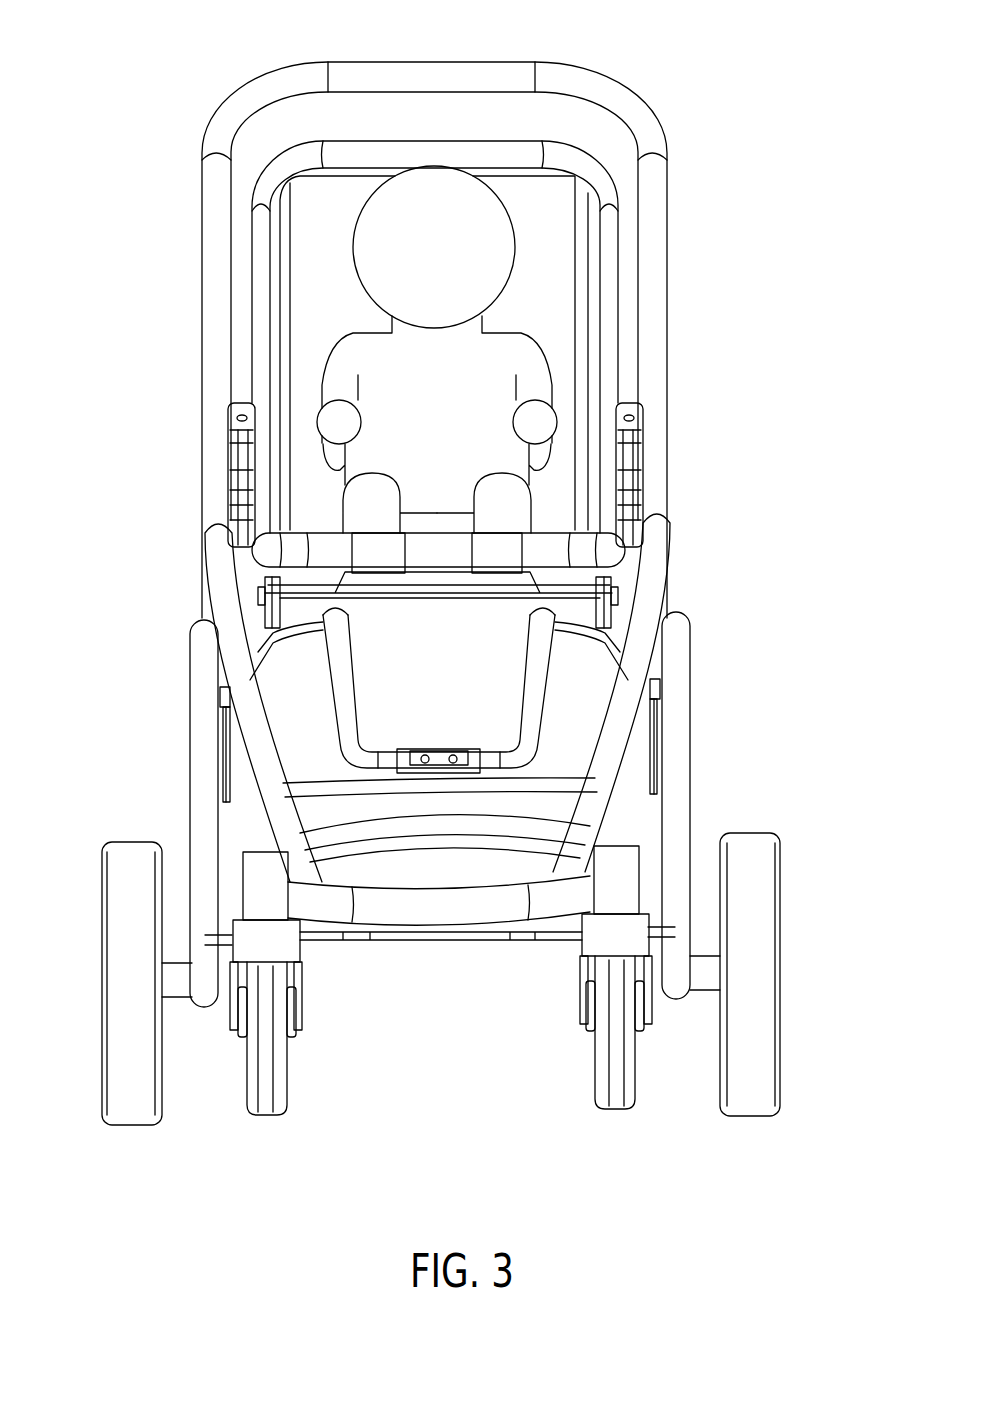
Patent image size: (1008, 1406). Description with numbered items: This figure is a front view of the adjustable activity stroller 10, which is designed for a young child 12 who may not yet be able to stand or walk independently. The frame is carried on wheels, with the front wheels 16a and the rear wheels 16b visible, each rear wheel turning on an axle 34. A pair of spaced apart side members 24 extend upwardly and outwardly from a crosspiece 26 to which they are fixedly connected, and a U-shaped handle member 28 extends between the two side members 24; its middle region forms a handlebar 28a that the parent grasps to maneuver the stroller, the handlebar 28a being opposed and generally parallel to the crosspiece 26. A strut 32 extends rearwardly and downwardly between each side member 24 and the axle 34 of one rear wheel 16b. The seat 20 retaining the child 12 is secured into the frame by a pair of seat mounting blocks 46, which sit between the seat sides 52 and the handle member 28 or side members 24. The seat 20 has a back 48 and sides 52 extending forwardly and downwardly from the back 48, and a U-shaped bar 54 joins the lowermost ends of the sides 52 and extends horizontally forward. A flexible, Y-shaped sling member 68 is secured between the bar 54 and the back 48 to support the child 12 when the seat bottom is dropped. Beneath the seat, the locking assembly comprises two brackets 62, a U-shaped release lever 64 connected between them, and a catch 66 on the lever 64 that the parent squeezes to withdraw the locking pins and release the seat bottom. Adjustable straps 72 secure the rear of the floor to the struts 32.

The adjustable activity stroller 10 is at (814, 403).
The child 12 is at (467, 237).
The front wheels 16a is at (275, 1085).
The rear wheels 16b is at (116, 1060).
The seat 20 is at (561, 192).
The side members 24 is at (232, 662).
The crosspiece 26 is at (431, 913).
The handle member 28 is at (668, 331).
The handlebar 28a is at (428, 72).
The strut 32 is at (200, 768).
The axle 34 is at (707, 967).
The seat mounting blocks 46 is at (242, 457).
The back 48 is at (343, 232).
The sides 52 is at (260, 275).
The U-shaped bar 54 is at (548, 543).
The brackets 62 is at (267, 602).
The release lever 64 is at (342, 685).
The catch 66 is at (447, 747).
The sling member 68 is at (385, 555).
The adjustable straps 72 is at (216, 827).